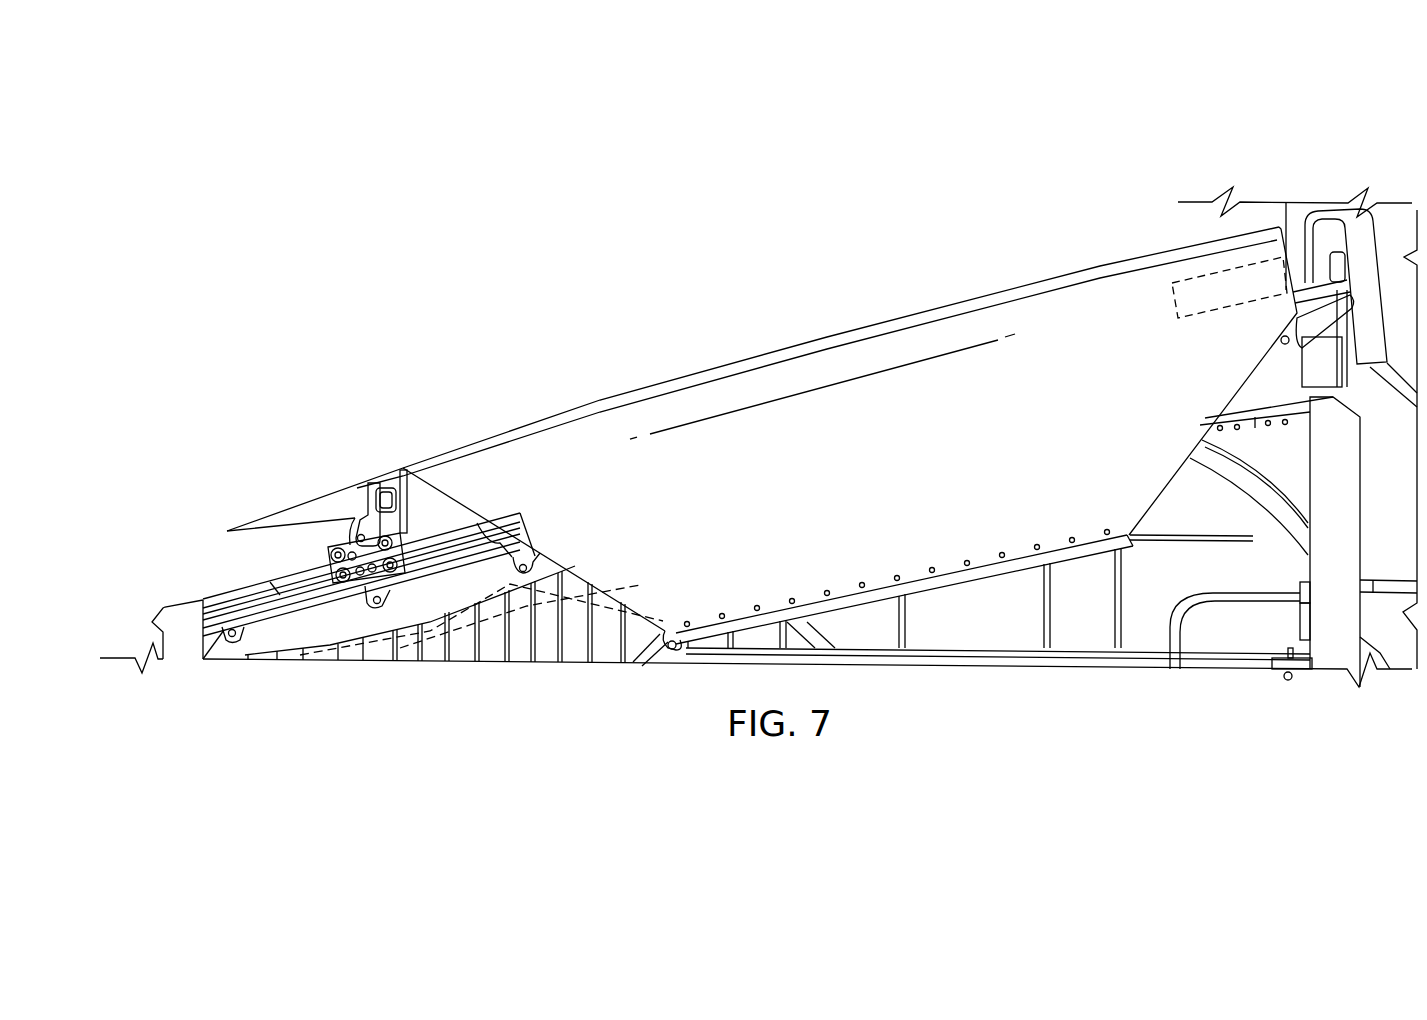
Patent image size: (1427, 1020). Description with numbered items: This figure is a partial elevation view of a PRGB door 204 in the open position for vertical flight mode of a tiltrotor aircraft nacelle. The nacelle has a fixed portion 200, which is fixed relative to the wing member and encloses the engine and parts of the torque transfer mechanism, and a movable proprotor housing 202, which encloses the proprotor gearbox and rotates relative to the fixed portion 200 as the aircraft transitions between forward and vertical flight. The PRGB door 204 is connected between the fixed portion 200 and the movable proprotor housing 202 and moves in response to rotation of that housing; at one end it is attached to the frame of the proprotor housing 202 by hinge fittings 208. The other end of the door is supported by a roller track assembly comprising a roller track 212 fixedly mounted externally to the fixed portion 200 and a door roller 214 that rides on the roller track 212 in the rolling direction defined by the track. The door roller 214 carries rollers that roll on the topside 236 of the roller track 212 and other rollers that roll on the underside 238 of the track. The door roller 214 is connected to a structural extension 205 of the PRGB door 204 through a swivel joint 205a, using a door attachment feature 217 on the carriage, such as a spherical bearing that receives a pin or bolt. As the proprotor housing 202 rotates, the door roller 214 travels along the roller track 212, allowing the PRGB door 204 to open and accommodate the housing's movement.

The fixed portion 200 is at (1253, 420).
The movable proprotor housing 202 is at (1325, 232).
The PRGB door 204 is at (826, 337).
The structural extension 205 is at (362, 528).
The swivel joint 205a is at (420, 494).
The hinge fittings 208 is at (1172, 312).
The roller track 212 is at (293, 578).
The door roller 214 is at (365, 597).
The door attachment feature 217 is at (350, 523).
The topside 236 is at (480, 515).
The underside 238 is at (545, 560).